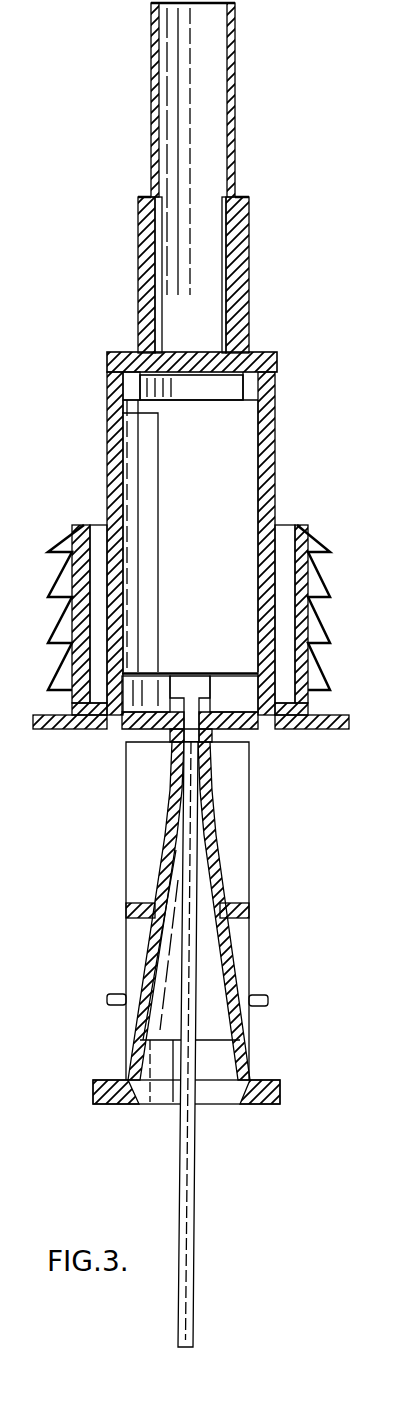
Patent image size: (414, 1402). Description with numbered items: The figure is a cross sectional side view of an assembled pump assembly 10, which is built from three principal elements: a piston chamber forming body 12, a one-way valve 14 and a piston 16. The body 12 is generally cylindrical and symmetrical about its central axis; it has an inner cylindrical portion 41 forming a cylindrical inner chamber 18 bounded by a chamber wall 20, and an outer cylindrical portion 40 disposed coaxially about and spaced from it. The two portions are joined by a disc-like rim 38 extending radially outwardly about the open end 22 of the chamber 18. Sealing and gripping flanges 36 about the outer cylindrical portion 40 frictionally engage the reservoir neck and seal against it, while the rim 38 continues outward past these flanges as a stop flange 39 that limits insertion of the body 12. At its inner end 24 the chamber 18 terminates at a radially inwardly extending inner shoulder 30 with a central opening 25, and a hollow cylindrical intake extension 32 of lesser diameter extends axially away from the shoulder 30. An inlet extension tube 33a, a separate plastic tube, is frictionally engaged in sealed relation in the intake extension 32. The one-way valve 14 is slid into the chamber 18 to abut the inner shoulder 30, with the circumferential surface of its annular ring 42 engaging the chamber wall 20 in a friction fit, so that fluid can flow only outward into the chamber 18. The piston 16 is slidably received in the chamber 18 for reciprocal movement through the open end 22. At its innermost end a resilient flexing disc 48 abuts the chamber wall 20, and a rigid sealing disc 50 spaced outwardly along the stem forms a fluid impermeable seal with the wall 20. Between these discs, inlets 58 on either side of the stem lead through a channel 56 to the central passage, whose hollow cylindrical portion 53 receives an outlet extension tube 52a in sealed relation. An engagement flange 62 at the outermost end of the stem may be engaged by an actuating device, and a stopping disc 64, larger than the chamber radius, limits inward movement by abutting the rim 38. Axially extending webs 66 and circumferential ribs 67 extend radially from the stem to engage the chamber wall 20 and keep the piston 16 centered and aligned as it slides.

The pump assembly 10 is at (331, 305).
The piston chamber forming body 12 is at (275, 440).
The one-way valve 14 is at (252, 396).
The piston 16 is at (238, 873).
The cylindrical inner chamber 18 is at (145, 468).
The chamber wall 20 is at (276, 490).
The open end 22 is at (120, 742).
The inner end 24 is at (122, 414).
The central opening 25 is at (183, 362).
The inner shoulder 30 is at (240, 360).
The intake extension 32 is at (245, 243).
The inlet extension tube 33a is at (236, 160).
The sealing and gripping flanges 36 is at (314, 545).
The disc-like rim 38 is at (90, 722).
The stop flange 39 is at (340, 732).
The outer cylindrical portion 40 is at (300, 620).
The inner cylindrical portion 41 is at (108, 497).
The annular ring 42 is at (125, 380).
The flexing disc 48 is at (235, 673).
The sealing disc 50 is at (240, 722).
The outlet extension tube 52a is at (190, 1190).
The hollow cylindrical portion 53 is at (212, 783).
The channel 56 is at (183, 683).
The inlets 58 is at (212, 700).
The engagement flange 62 is at (274, 1097).
The stopping disc 64 is at (110, 1000).
The axially extending webs 66 is at (126, 826).
The circumferential ribs 67 is at (126, 910).